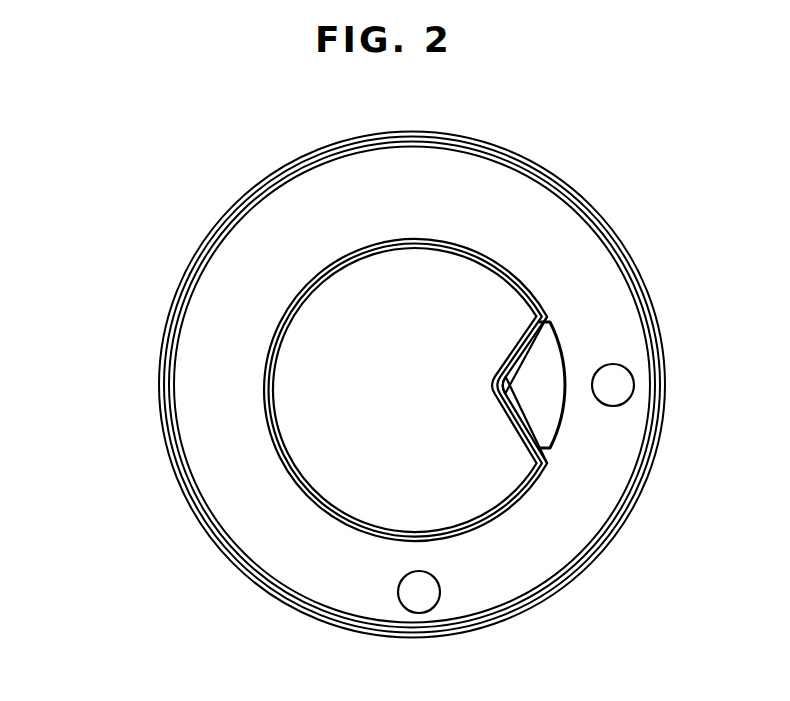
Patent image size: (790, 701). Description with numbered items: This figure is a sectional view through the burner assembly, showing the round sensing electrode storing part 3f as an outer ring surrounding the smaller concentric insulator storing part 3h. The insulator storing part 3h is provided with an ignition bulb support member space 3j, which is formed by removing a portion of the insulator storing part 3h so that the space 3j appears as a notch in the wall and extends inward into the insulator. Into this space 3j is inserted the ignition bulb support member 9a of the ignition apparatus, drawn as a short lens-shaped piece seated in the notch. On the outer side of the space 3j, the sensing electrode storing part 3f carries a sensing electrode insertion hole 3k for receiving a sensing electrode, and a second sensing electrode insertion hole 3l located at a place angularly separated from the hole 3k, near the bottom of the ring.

The sensing electrode storing part 3f is at (248, 492).
The insulator storing part 3h is at (293, 292).
The ignition bulb support member space 3j is at (522, 417).
The sensing electrode insertion hole 3k is at (618, 383).
The sensing electrode insertion hole 3l is at (412, 598).
The ignition bulb support member 9a is at (545, 430).